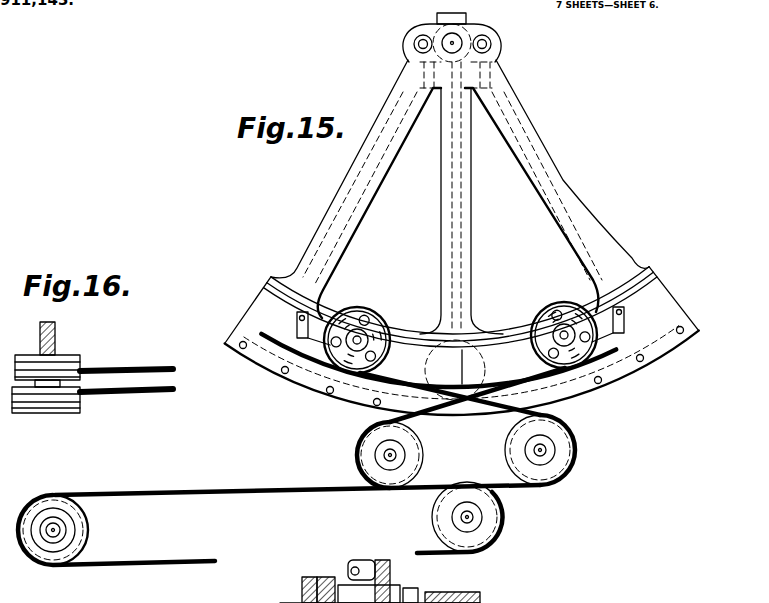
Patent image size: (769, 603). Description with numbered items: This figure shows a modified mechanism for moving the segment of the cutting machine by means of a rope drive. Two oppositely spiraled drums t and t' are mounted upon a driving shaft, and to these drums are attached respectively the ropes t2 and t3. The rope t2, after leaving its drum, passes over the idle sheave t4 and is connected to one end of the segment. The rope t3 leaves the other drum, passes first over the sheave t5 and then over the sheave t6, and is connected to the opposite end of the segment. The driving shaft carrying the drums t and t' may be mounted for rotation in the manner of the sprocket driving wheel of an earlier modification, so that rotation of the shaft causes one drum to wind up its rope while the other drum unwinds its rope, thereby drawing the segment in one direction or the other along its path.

In FIG. 16, the spiraled drum t is at (60, 341).
In FIG. 15, the spiraled drum t' is at (53, 544).
In FIG. 16, the spiraled drum t' is at (46, 397).
In FIG. 15, the rope t2 is at (331, 394).
In FIG. 16, the rope t2 is at (145, 366).
In FIG. 15, the rope t3 is at (358, 441).
In FIG. 16, the rope t3 is at (167, 395).
In FIG. 15, the idle sheave t4 is at (563, 444).
In FIG. 15, the sheave t5 is at (481, 530).
In FIG. 15, the sheave t6 is at (374, 463).